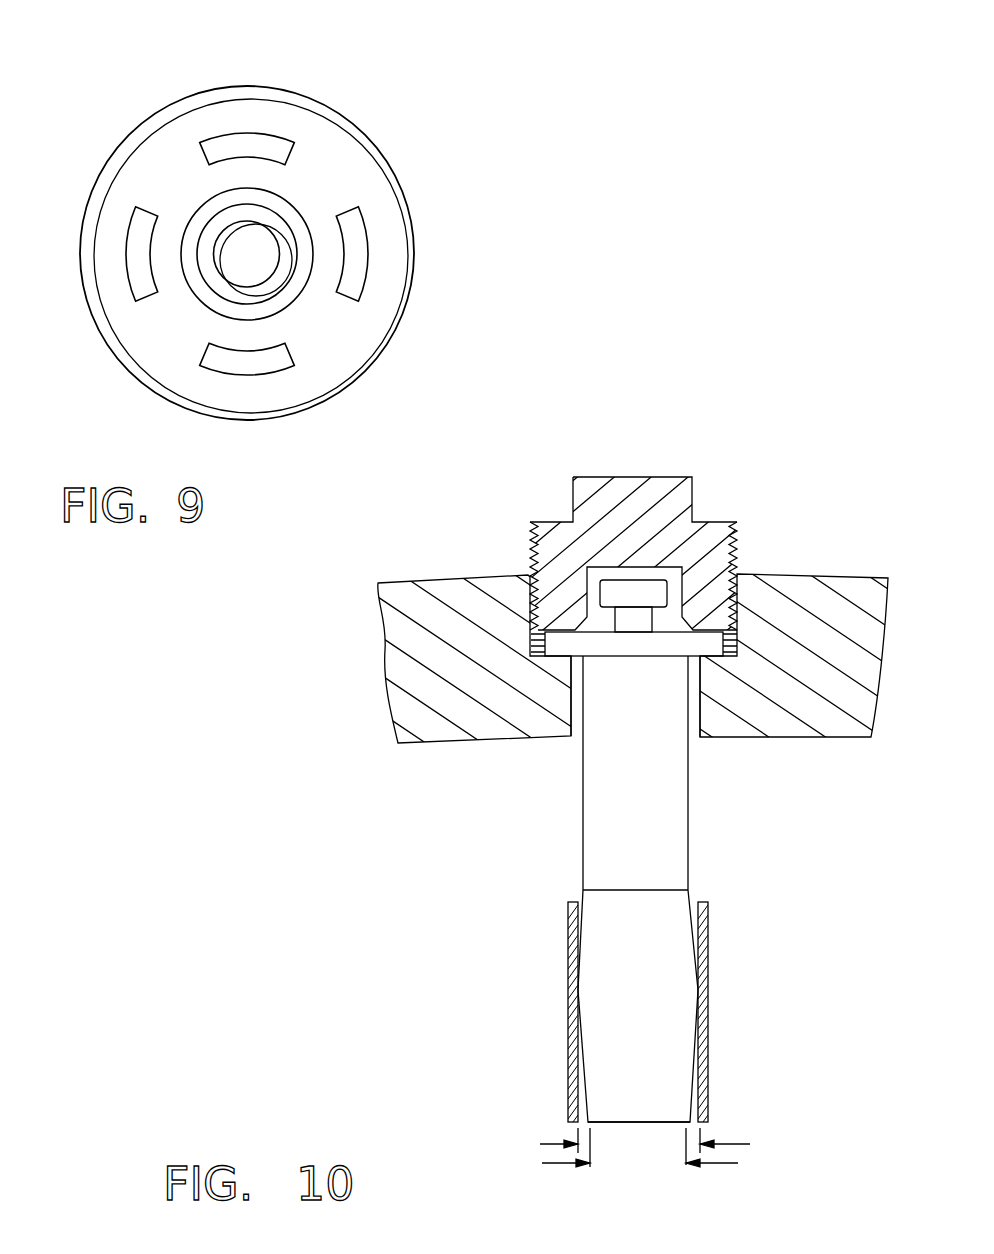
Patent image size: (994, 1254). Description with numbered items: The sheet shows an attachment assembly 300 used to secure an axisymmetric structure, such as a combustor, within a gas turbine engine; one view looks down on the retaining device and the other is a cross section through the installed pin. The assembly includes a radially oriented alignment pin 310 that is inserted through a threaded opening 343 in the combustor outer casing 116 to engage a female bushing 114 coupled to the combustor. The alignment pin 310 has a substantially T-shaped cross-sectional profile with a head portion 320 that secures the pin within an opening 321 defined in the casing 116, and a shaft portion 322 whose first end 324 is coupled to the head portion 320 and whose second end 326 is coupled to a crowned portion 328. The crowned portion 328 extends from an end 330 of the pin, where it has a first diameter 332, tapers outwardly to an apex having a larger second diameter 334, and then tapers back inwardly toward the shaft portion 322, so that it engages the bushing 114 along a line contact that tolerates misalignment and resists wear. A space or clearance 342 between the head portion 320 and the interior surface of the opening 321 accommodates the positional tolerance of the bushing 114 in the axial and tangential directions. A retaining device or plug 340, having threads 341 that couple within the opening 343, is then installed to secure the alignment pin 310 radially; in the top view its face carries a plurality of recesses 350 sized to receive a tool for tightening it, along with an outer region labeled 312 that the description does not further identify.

In FIG. 9, the attachment assembly 300 is at (420, 90).
In FIG. 10, the attachment assembly 300 is at (688, 432).
In FIG. 9, the nut face 312 is at (366, 146).
In FIG. 9, the recesses 350 is at (242, 143).
In FIG. 10, the alignment pin 310 is at (750, 858).
In FIG. 10, the retaining device 340 is at (632, 487).
In FIG. 10, the threads 341 is at (527, 523).
In FIG. 10, the threaded opening 343 is at (742, 564).
In FIG. 10, the space 342 is at (737, 640).
In FIG. 10, the head portion 320 is at (575, 647).
In FIG. 10, the opening 321 is at (692, 720).
In FIG. 10, the shaft portion 322 is at (601, 806).
In FIG. 10, the first end 324 is at (617, 655).
In FIG. 10, the second end 326 is at (632, 888).
In FIG. 10, the crowned portion 328 is at (625, 955).
In FIG. 10, the end 330 is at (640, 1122).
In FIG. 10, the first diameter 332 is at (722, 1163).
In FIG. 10, the second diameter 334 is at (540, 1144).
In FIG. 10, the female bushing 114 is at (708, 964).
In FIG. 10, the combustor outer casing 116 is at (412, 683).